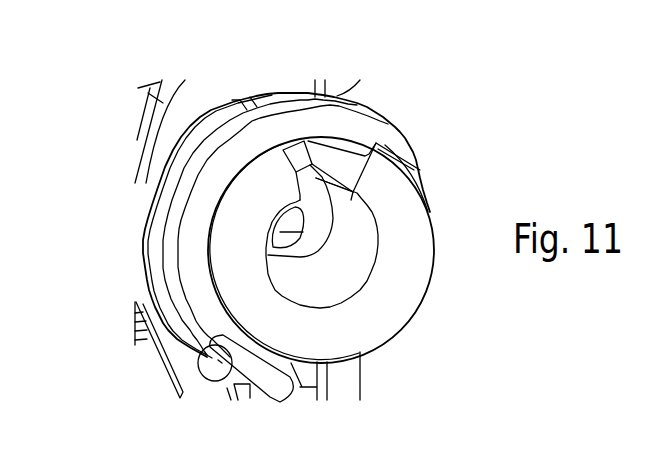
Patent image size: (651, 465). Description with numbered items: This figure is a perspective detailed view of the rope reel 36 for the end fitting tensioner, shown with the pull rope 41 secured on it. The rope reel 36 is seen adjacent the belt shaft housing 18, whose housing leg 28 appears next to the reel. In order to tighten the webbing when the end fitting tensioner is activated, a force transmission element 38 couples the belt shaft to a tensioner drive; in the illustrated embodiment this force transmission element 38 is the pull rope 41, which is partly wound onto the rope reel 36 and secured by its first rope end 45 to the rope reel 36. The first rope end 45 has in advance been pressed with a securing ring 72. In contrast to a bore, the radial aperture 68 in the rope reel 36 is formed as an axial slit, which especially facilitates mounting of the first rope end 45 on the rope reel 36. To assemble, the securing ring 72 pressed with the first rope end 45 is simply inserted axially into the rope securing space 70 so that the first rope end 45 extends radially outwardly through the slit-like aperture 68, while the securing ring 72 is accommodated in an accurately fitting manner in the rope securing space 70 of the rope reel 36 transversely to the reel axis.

The belt shaft housing 18 is at (116, 263).
The housing leg 28 is at (173, 337).
The rope reel 36 is at (403, 197).
The force transmission element 38 is at (226, 225).
The pull rope 41 is at (193, 223).
The first rope end 45 is at (257, 90).
The radial aperture 68 is at (328, 150).
The rope securing space 70 is at (370, 246).
The securing ring 72 is at (302, 257).